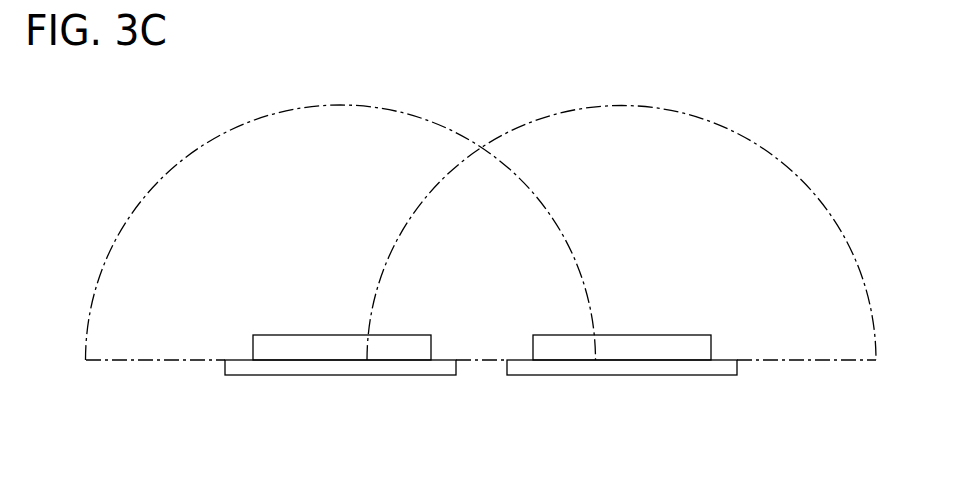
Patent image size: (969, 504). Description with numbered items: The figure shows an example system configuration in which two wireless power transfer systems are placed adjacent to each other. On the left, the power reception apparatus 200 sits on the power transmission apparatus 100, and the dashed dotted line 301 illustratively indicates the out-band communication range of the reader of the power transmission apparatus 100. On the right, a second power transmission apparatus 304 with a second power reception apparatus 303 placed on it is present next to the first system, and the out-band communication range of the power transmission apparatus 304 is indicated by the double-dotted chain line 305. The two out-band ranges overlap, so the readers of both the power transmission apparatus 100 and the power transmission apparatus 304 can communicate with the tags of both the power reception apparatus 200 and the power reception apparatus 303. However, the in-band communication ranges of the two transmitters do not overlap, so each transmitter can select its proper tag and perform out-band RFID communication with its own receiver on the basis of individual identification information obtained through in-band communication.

The power transmission apparatus 100 is at (342, 375).
The power reception apparatus 200 is at (336, 335).
The dashed dotted line 301 is at (341, 106).
The power reception apparatus 303 is at (615, 335).
The power transmission apparatus 304 is at (622, 375).
The double-dotted chain line 305 is at (620, 106).